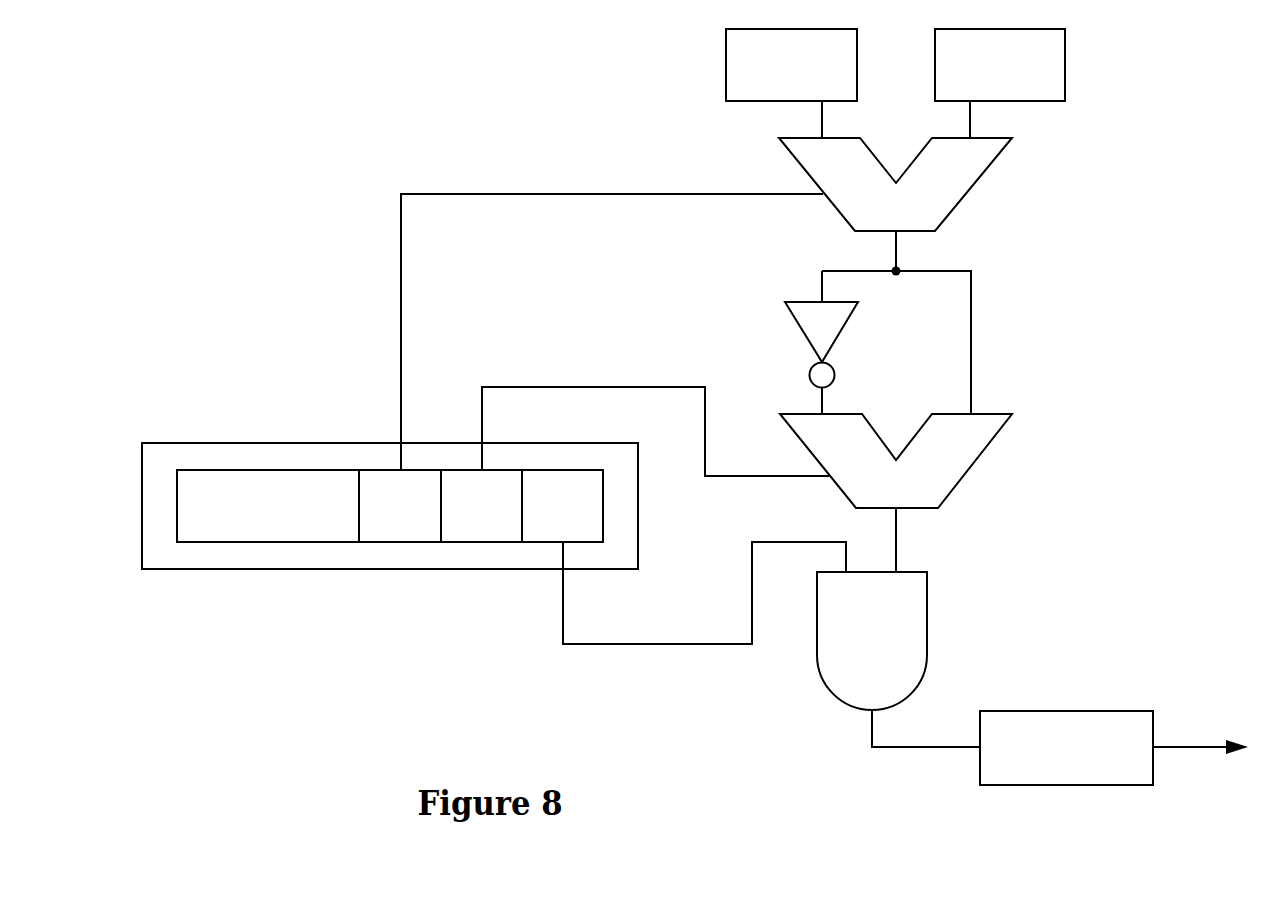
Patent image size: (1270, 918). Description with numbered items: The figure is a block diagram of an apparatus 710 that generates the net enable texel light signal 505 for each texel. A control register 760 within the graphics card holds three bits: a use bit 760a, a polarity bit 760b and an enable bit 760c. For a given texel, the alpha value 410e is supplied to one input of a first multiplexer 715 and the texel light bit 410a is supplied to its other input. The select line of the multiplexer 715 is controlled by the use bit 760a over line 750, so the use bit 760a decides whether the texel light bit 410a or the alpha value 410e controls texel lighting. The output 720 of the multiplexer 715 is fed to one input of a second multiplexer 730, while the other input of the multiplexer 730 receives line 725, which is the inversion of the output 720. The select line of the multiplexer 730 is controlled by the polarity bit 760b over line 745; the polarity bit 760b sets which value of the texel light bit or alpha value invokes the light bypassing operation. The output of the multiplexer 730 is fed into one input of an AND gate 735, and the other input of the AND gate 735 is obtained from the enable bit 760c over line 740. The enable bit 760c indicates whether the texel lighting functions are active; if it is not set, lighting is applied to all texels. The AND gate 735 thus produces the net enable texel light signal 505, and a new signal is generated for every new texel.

The apparatus 710 is at (227, 155).
The alpha value 410e is at (726, 70).
The texel light bit 410a is at (1065, 65).
The multiplexer 715 is at (977, 188).
The line 750 is at (663, 196).
The output 720 is at (971, 334).
The line 725 is at (812, 400).
The multiplexer 730 is at (978, 462).
The line 745 is at (549, 387).
The enable line from control register bit 760c 740 is at (660, 646).
The AND gate 735 is at (927, 608).
The net enable texel light signal 505 is at (1068, 787).
The control register 760 is at (245, 425).
The use bit 760a is at (400, 506).
The polarity bit 760b is at (481, 506).
The enable bit 760c is at (562, 506).